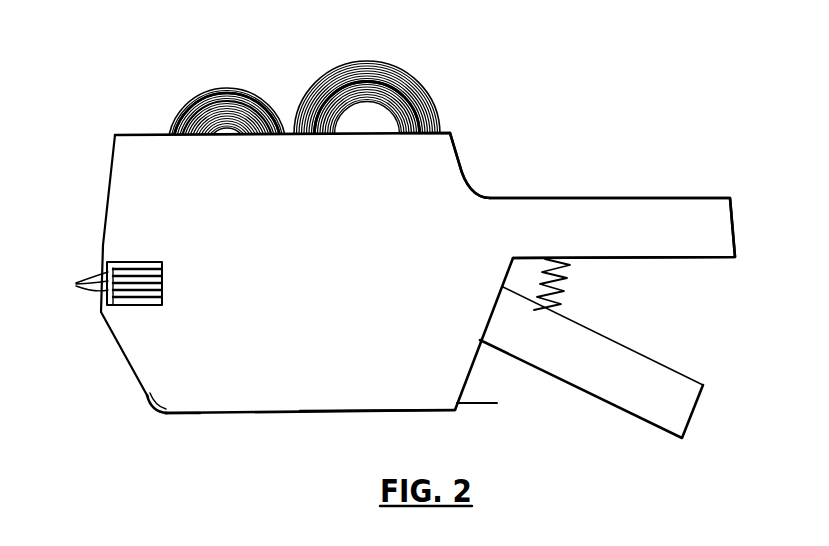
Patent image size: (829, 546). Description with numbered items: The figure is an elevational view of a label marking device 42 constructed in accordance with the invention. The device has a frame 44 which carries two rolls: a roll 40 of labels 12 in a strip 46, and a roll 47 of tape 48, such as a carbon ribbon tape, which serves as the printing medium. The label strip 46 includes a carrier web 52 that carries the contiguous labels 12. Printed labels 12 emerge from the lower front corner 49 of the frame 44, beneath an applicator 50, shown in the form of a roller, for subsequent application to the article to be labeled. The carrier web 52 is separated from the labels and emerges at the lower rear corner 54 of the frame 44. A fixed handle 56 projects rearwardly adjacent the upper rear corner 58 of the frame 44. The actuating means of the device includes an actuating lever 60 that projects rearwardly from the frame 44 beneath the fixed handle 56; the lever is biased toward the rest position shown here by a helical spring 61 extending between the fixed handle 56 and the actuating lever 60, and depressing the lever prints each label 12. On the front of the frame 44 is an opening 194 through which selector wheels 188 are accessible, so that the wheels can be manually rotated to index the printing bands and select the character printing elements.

The label 12 is at (159, 416).
The roll 40 is at (401, 58).
The label marking device 42 is at (466, 168).
The frame 44 is at (314, 246).
The strip 46 is at (414, 87).
The roll 47 is at (224, 84).
The tape 48 is at (189, 112).
The lower front corner 49 is at (150, 400).
The applicator 50 is at (150, 408).
The carrier web 52 is at (480, 403).
The lower rear corner 54 is at (455, 412).
The fixed handle 56 is at (617, 215).
The upper rear corner 58 is at (452, 133).
The actuating lever 60 is at (630, 366).
The helical spring 61 is at (566, 282).
The selector wheels 188 is at (76, 283).
The opening 194 is at (141, 305).